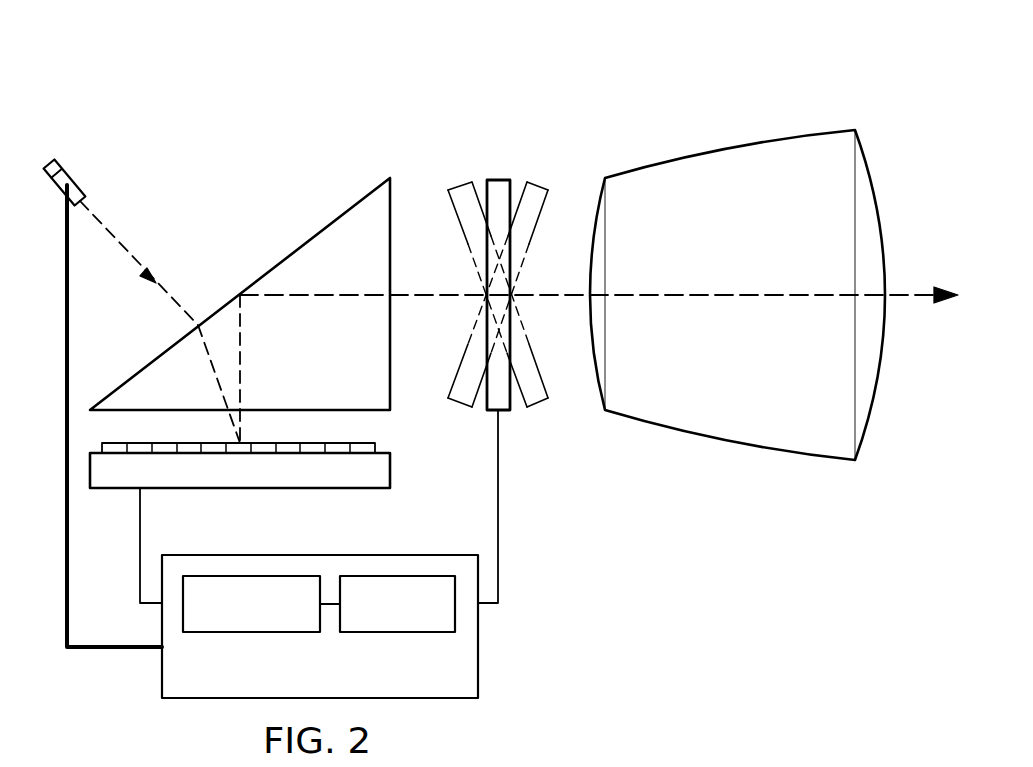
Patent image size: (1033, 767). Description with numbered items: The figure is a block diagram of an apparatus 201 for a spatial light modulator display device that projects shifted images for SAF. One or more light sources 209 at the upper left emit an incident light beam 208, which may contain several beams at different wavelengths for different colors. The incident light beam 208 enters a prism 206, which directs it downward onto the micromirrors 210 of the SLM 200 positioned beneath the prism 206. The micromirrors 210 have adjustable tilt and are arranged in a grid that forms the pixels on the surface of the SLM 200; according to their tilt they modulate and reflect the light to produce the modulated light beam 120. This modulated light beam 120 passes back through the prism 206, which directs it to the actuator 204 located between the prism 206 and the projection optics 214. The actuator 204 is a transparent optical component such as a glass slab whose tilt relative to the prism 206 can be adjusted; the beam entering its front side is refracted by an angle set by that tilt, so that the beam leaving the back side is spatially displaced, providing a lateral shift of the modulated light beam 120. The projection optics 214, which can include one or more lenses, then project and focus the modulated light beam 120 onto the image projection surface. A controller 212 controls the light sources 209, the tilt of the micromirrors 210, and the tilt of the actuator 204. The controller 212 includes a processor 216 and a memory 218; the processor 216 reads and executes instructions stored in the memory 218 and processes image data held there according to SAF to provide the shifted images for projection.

The apparatus 201 is at (358, 76).
The light sources 209 is at (76, 185).
The incident light beam 208 is at (109, 232).
The prism 206 is at (390, 277).
The micromirrors 210 is at (376, 447).
The SLM 200 is at (239, 490).
The actuator 204 is at (492, 179).
The projection optics 214 is at (730, 152).
The modulated light beam 120 is at (900, 293).
The controller 212 is at (160, 668).
The processor 216 is at (253, 633).
The memory 218 is at (396, 633).